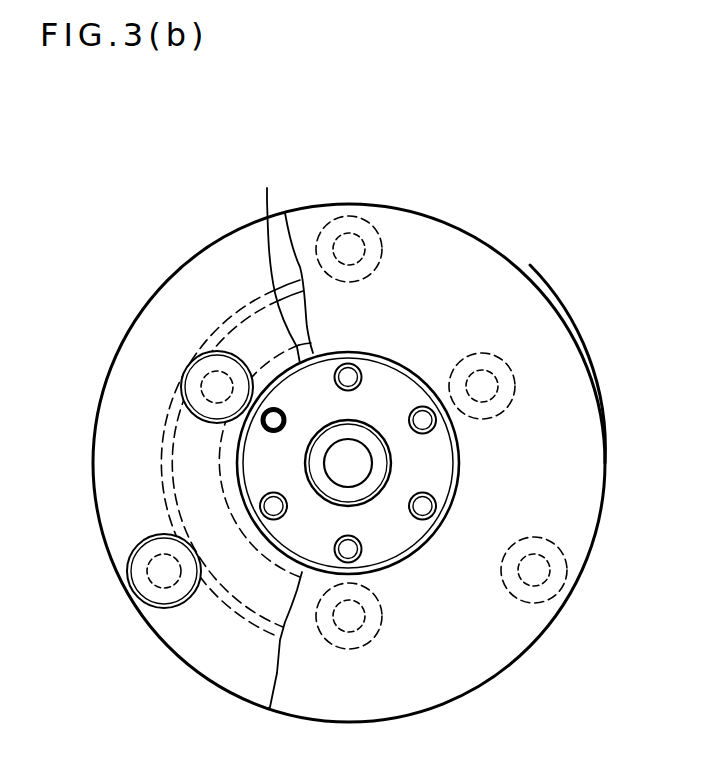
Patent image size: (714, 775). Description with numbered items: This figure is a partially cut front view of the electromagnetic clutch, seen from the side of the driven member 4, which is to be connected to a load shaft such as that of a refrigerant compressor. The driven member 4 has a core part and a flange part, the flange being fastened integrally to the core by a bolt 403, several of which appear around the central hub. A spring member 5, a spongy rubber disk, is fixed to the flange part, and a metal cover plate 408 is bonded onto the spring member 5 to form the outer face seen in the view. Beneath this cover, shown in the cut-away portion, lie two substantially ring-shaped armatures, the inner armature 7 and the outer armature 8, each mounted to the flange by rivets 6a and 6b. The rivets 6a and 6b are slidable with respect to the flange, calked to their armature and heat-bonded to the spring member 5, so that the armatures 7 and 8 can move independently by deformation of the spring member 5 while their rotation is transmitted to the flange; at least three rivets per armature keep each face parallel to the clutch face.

The driven member 4 is at (284, 435).
The spring member 5 is at (207, 268).
The inner armature 7 is at (262, 335).
The outer armature 8 is at (168, 305).
The rivet 6a is at (205, 391).
The rivet 6b is at (149, 592).
The bolt 403 is at (350, 374).
The metal cover plate 408 is at (533, 308).